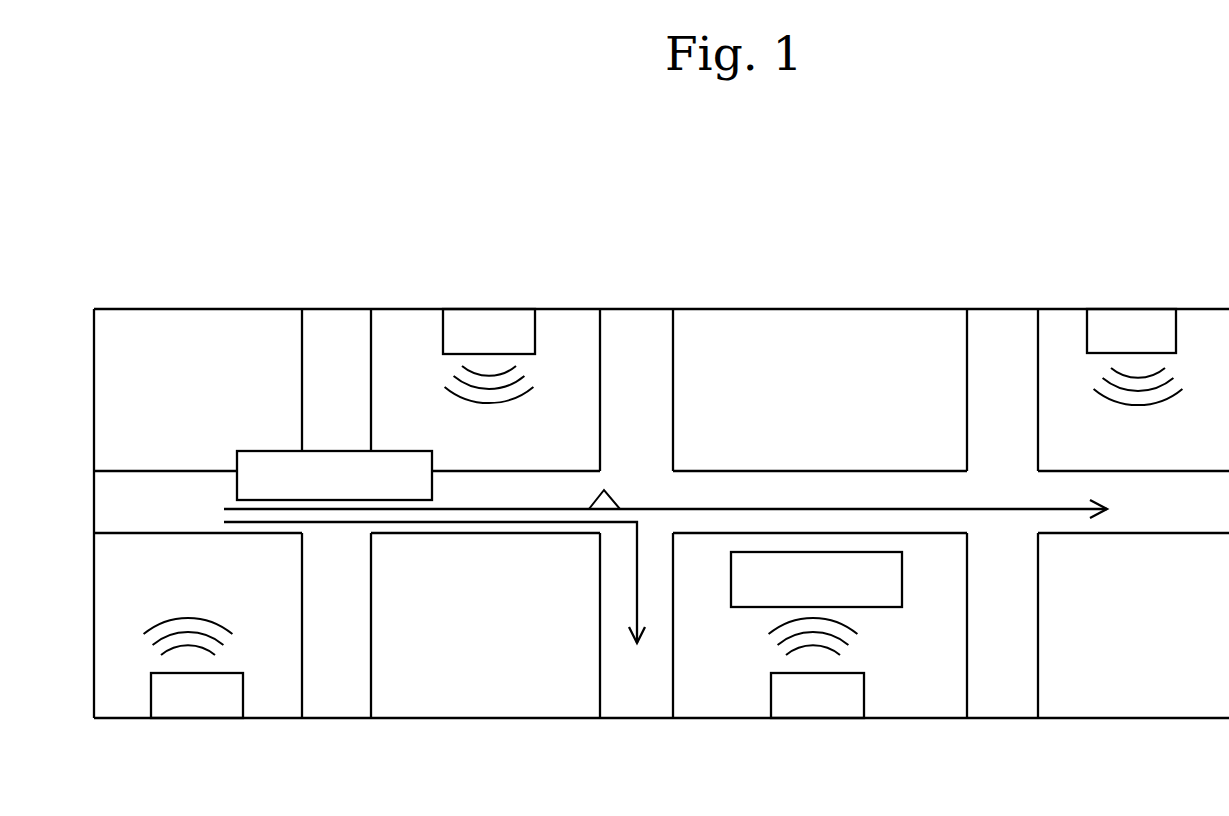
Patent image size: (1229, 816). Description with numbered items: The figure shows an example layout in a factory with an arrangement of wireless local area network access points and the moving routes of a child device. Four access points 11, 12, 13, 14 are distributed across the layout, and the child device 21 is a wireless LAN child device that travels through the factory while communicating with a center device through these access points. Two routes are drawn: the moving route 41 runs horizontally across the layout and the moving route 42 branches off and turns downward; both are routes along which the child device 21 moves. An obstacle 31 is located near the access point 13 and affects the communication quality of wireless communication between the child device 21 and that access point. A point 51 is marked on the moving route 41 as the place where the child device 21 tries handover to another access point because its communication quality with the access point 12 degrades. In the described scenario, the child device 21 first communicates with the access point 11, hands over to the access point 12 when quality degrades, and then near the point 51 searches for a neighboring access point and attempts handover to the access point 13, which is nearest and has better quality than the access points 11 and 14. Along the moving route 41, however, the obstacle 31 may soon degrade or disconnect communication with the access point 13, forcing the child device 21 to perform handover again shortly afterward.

The access point 11 is at (200, 718).
The access point 12 is at (500, 309).
The access point 13 is at (817, 718).
The access point 14 is at (1144, 309).
The child device 21 is at (374, 451).
The obstacle 31 is at (902, 583).
The moving route 41 is at (967, 509).
The moving route 42 is at (637, 605).
The point 51 is at (604, 490).